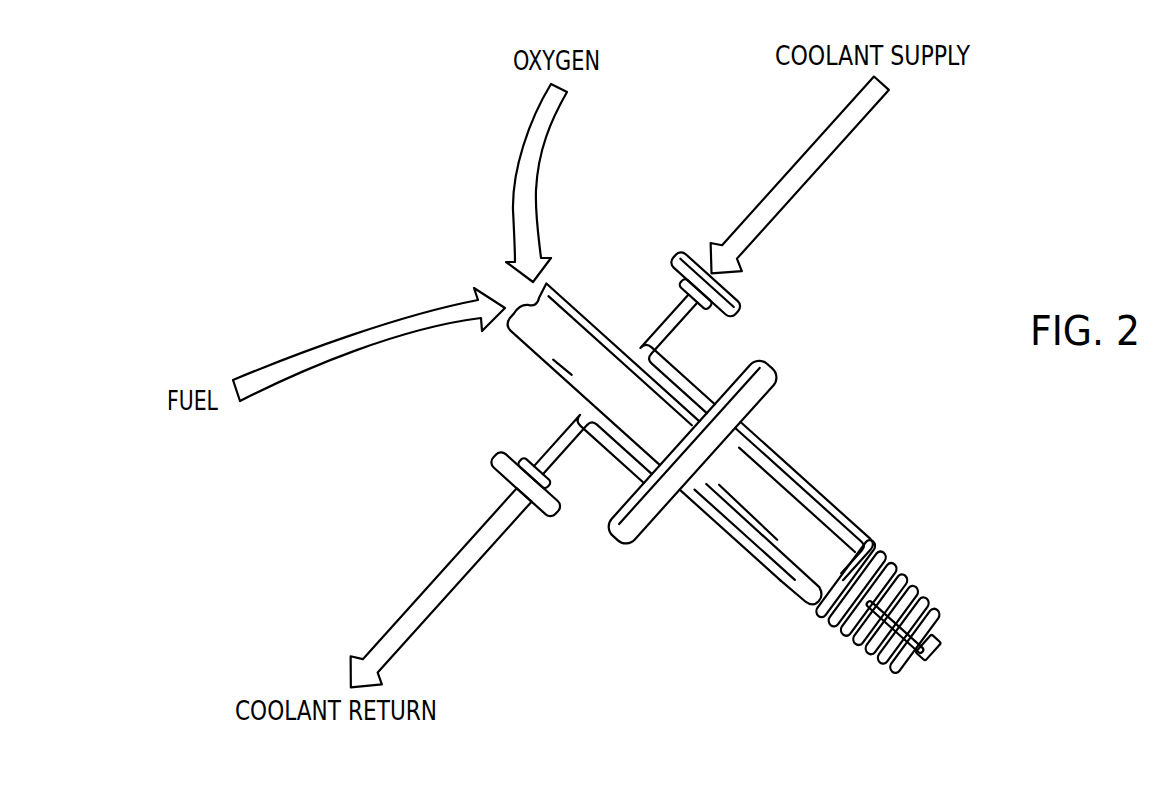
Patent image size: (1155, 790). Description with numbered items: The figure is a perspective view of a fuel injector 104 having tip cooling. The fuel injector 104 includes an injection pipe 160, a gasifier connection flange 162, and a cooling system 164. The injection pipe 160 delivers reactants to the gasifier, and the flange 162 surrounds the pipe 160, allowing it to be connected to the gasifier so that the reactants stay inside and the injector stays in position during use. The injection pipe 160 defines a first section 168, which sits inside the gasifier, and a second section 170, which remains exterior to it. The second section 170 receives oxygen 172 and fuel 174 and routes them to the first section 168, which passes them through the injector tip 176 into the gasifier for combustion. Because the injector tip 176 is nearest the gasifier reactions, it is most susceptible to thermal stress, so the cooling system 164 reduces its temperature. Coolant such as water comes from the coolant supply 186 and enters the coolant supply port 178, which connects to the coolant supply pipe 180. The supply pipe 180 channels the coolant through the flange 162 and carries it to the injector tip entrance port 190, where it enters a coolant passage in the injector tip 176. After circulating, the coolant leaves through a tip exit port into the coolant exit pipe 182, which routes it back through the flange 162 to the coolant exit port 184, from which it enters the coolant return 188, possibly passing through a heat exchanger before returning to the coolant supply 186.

The fuel injector 104 is at (590, 706).
The injection pipe 160 is at (828, 438).
The gasifier connection flange 162 is at (628, 535).
The cooling system 164 is at (972, 222).
The first section 168 is at (797, 568).
The second section 170 is at (590, 321).
The oxygen 172 is at (515, 187).
The fuel 174 is at (357, 334).
The injector tip 176 is at (948, 628).
The coolant supply port 178 is at (678, 260).
The coolant supply pipe 180 is at (835, 498).
The coolant exit pipe 182 is at (717, 538).
The coolant exit port 184 is at (500, 460).
The coolant supply 186 is at (793, 161).
The coolant return 188 is at (440, 575).
The injector tip entrance port 190 is at (930, 645).